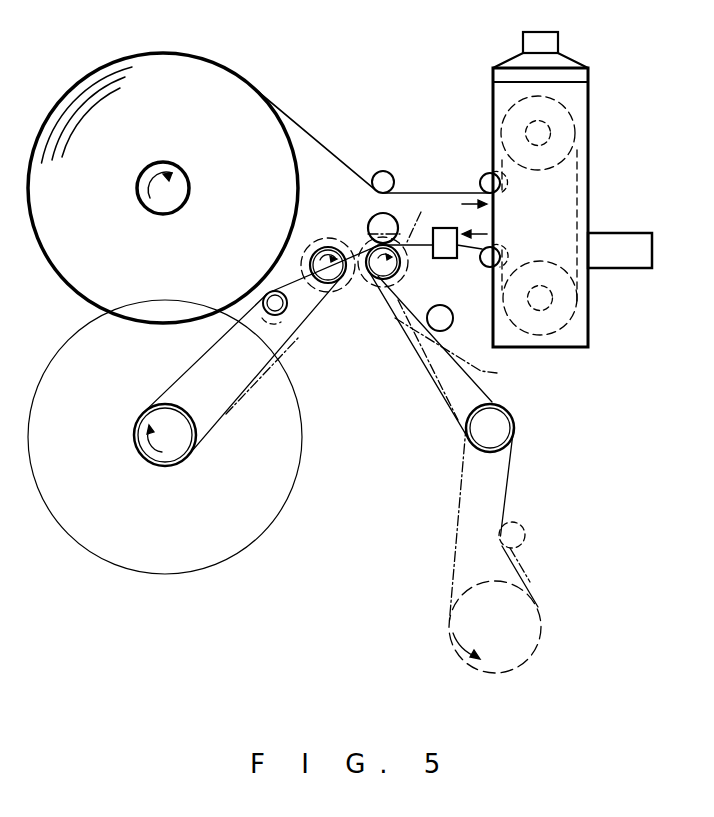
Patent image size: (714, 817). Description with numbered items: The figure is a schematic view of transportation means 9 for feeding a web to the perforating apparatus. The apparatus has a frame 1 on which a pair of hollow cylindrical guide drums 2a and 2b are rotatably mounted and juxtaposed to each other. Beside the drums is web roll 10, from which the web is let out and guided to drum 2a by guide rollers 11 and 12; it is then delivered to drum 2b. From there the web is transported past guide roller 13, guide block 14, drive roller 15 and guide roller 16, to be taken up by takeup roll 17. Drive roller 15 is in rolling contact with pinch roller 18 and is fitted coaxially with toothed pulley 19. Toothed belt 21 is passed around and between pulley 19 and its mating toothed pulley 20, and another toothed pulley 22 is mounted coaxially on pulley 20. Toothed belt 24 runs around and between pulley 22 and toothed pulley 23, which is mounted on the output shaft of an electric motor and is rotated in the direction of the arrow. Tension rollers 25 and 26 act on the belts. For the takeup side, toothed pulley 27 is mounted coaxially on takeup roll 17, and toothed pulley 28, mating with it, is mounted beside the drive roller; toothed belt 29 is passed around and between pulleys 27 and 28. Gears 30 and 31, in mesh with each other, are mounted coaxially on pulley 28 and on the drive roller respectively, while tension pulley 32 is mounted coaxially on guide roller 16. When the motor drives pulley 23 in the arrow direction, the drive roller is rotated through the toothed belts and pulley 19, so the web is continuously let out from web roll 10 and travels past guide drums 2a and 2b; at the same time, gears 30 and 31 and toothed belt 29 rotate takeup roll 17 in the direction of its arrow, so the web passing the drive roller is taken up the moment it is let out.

The frame 1 is at (580, 349).
The guide drum 2a is at (573, 111).
The guide drum 2b is at (578, 325).
The transportation means 9 is at (284, 93).
The web roll 10 is at (163, 53).
The guide roller 11 is at (385, 171).
The guide roller 12 is at (480, 178).
The guide roller 13 is at (483, 256).
The guide block 14 is at (441, 254).
The drive roller 15 is at (376, 277).
The guide roller 16 is at (277, 316).
The takeup roll 17 is at (170, 455).
The pinch roller 18 is at (372, 225).
The toothed pulley 19 is at (390, 291).
The toothed pulley 20 is at (514, 425).
The toothed belt 21 is at (449, 356).
The toothed pulley 22 is at (494, 432).
The toothed pulley 23 is at (543, 632).
The toothed belt 24 is at (506, 470).
The tension roller 25 is at (449, 326).
The tension roller 26 is at (525, 535).
The toothed pulley 27 is at (189, 452).
The toothed pulley 28 is at (334, 283).
The toothed belt 29 is at (264, 377).
The gear 30 is at (420, 217).
The gear 31 is at (334, 241).
The tension pulley 32 is at (280, 322).